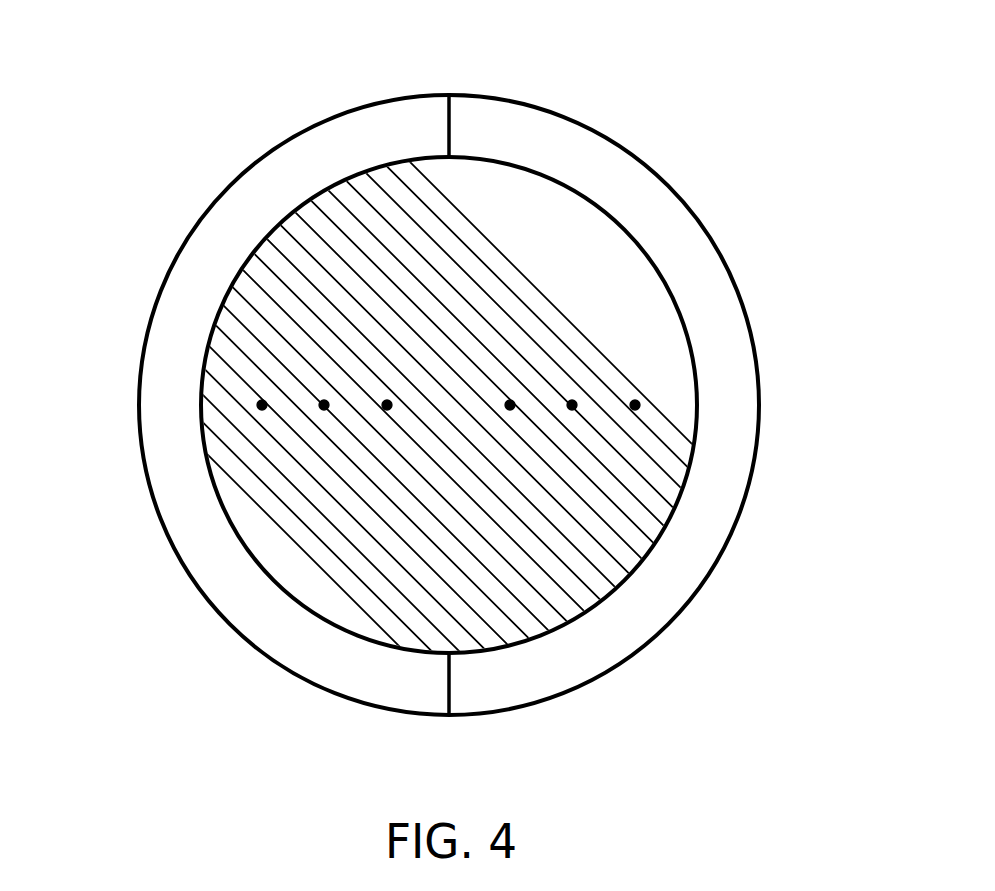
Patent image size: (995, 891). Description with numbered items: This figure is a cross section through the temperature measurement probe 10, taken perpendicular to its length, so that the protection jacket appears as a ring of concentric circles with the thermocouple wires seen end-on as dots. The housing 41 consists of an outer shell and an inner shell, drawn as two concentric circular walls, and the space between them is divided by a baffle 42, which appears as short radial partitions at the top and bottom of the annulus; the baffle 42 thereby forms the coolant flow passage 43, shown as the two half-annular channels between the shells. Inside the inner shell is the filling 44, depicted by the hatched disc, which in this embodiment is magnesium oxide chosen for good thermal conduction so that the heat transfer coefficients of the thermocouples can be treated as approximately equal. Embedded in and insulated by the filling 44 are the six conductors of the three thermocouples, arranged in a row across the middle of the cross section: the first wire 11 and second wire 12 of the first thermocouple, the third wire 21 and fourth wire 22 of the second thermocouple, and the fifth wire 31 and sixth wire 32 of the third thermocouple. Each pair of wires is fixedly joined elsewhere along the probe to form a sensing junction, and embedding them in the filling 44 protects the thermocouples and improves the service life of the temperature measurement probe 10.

The temperature measurement probe 10 is at (497, 445).
The first wire 11 is at (323, 405).
The second wire 12 is at (573, 405).
The third wire 21 is at (258, 404).
The fourth wire 22 is at (387, 405).
The fifth wire 31 is at (510, 405).
The sixth wire 32 is at (643, 403).
The housing 41 is at (467, 388).
The baffle 42 is at (453, 125).
The coolant flow passage 43 is at (322, 157).
The filling 44 is at (602, 328).